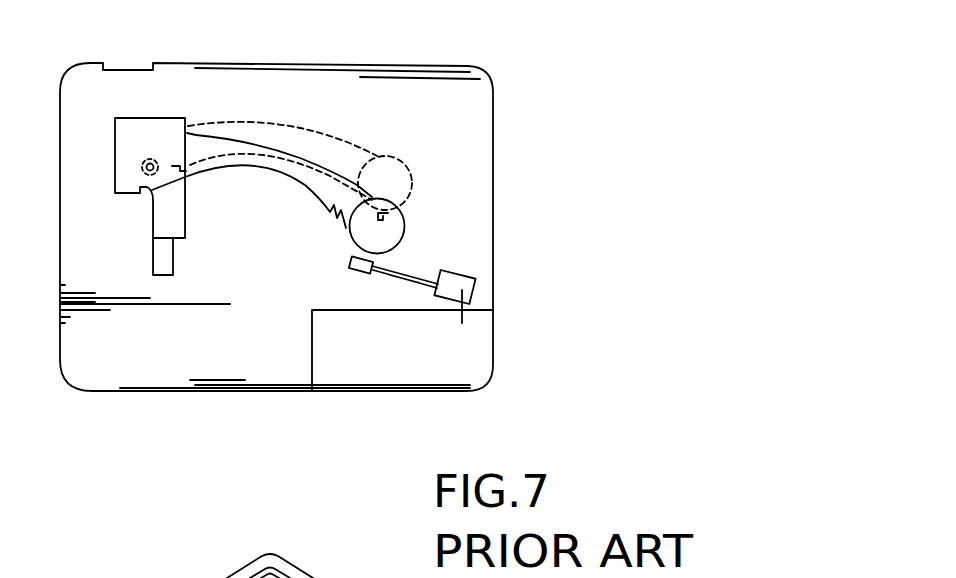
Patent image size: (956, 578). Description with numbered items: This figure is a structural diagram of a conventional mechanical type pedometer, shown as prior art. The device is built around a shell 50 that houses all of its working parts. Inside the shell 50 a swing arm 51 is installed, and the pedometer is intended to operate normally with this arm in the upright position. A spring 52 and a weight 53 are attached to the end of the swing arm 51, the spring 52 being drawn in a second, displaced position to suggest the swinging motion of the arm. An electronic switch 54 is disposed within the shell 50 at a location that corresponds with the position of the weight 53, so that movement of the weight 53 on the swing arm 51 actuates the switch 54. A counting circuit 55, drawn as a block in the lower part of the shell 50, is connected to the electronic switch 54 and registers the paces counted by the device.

The shell 50 is at (487, 117).
The swing arm 51 is at (318, 112).
The spring 52 is at (337, 170).
The weight 53 is at (397, 232).
The electronic switch 54 is at (463, 273).
The counting circuit 55 is at (407, 387).